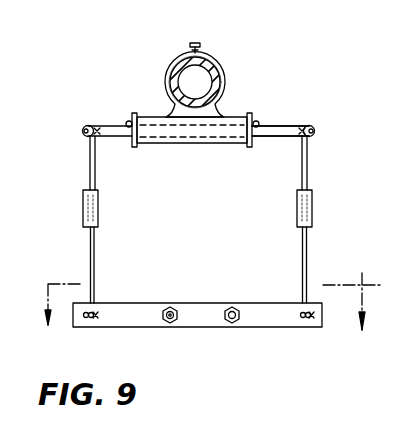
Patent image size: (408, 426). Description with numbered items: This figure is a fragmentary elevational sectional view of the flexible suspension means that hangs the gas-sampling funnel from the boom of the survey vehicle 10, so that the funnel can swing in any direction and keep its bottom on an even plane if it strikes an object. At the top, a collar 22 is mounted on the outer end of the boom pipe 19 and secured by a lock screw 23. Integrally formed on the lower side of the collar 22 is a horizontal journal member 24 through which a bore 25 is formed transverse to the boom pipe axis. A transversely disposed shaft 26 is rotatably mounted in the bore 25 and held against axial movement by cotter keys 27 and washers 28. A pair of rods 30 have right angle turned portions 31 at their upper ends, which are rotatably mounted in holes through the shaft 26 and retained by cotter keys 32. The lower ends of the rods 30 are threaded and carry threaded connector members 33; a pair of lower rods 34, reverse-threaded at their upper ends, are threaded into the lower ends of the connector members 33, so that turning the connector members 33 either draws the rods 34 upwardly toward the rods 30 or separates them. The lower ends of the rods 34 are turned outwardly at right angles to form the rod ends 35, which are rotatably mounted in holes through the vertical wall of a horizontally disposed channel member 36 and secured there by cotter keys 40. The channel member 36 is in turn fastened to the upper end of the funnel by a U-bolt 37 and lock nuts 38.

The vehicle 10 is at (205, 289).
The boom pipe 19 is at (175, 66).
The collar 22 is at (222, 73).
The lock screw 23 is at (198, 45).
The horizontal journal member 24 is at (222, 144).
The bore 25 is at (162, 145).
The shaft 26 is at (274, 137).
The cotter keys 27 is at (258, 121).
The washers 28 is at (135, 113).
The rods 30 is at (90, 163).
The right angle turned portions 31 is at (88, 125).
The cotter keys 32 is at (98, 127).
The threaded connector members 33 is at (98, 210).
The rods 34 is at (94, 263).
The right angle rod ends 35 is at (88, 320).
The channel member 36 is at (272, 318).
The U-bolt 37 is at (178, 310).
The lock nuts 38 is at (168, 307).
The cotter keys 40 is at (92, 308).